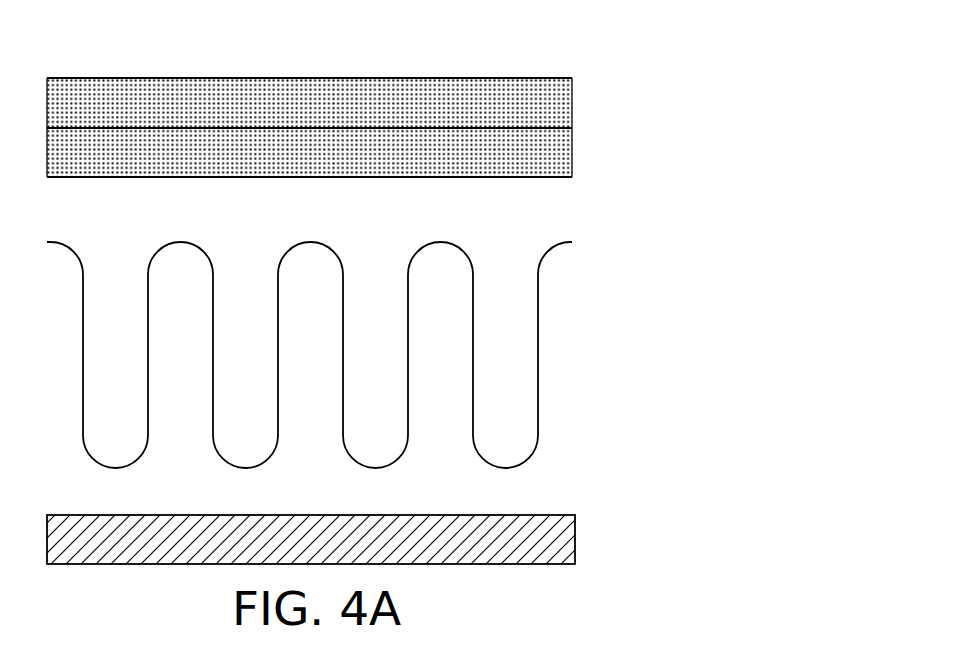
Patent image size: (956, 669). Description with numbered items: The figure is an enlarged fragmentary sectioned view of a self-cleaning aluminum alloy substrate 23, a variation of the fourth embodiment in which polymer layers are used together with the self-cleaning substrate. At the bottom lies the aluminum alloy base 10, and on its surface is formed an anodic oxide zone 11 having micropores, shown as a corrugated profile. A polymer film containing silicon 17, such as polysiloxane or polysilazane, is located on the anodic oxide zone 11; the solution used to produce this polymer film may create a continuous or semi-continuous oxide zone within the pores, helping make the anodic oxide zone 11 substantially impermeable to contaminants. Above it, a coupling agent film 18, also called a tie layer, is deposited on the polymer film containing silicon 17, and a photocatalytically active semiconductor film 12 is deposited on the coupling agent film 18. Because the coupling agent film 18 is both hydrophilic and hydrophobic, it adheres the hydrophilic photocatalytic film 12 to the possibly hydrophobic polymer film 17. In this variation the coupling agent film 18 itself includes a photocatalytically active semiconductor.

The aluminum alloy base 10 is at (582, 542).
The anodic oxide zone 11 is at (582, 408).
The photocatalytically active semiconductor film 12 is at (582, 102).
The polymer film containing silicon 17 is at (582, 203).
The coupling agent film 18 is at (582, 148).
The self-cleaning aluminum alloy substrate 23 is at (716, 75).